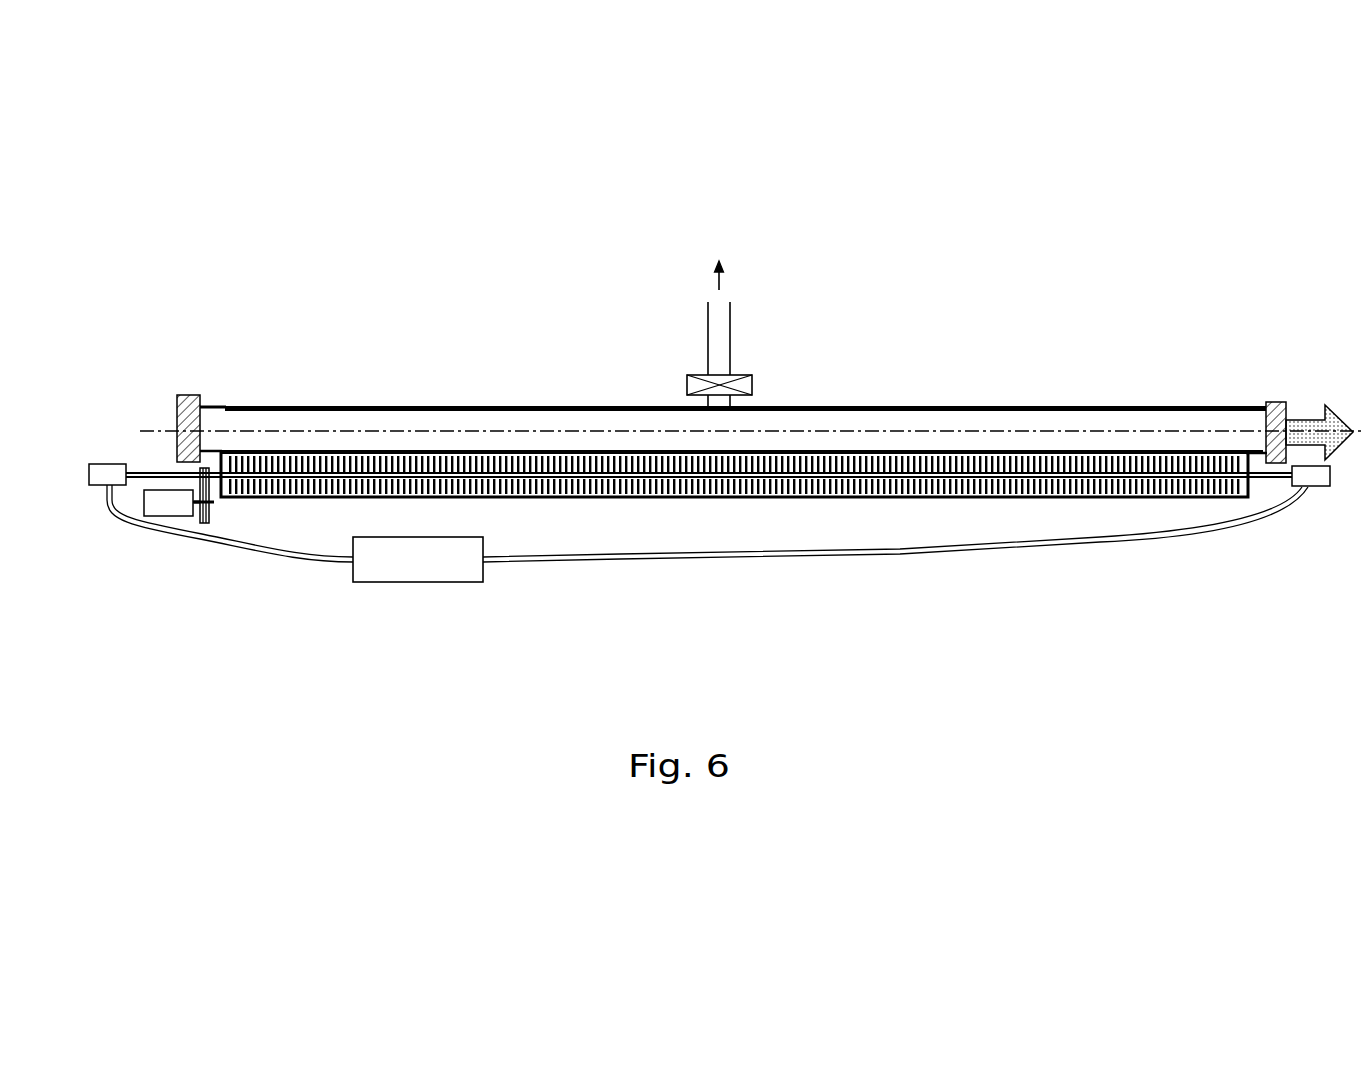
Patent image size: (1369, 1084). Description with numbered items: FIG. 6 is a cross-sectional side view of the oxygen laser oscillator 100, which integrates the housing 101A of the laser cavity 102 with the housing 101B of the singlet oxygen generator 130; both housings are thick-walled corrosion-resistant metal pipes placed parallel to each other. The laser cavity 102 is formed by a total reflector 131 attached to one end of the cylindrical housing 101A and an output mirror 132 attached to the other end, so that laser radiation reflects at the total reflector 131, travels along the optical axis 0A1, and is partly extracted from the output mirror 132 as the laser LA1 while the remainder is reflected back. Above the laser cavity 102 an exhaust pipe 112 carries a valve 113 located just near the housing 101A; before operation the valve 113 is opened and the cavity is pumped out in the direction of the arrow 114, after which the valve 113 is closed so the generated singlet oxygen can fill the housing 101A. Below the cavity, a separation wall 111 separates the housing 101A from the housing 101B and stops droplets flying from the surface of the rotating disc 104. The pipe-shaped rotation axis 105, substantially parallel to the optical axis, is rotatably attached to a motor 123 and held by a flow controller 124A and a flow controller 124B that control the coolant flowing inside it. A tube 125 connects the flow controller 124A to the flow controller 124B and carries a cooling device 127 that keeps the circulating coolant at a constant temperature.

The oxygen laser oscillator 100 is at (194, 200).
The optical axis 0A1 is at (458, 430).
The housing of the laser cavity 101A is at (365, 407).
The housing of the SOG 101B is at (540, 498).
The laser cavity 102 is at (733, 480).
The rotating disc 104 is at (734, 548).
The rotation axis 105 is at (735, 473).
The separation wall 111 is at (830, 455).
The exhaust pipe 112 is at (720, 345).
The valve 113 is at (753, 385).
The arrow 114 is at (720, 259).
The motor 123 is at (168, 510).
The flow controller 124A is at (103, 477).
The flow controller 124B is at (1310, 487).
The tube 125 is at (230, 555).
The cooling device 127 is at (428, 567).
The singlet oxygen generator 130 is at (1012, 500).
The total reflector 131 is at (188, 395).
The output mirror 132 is at (1262, 400).
The extracted laser LA1 is at (1302, 420).